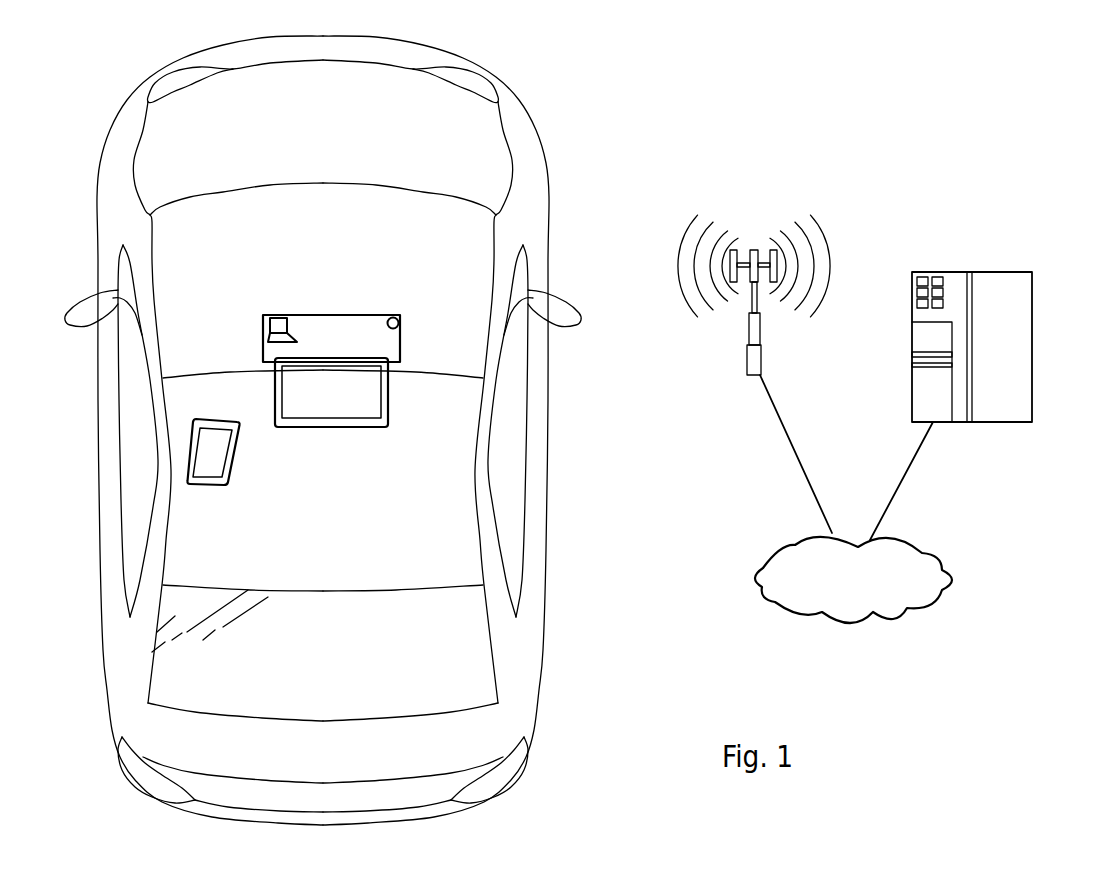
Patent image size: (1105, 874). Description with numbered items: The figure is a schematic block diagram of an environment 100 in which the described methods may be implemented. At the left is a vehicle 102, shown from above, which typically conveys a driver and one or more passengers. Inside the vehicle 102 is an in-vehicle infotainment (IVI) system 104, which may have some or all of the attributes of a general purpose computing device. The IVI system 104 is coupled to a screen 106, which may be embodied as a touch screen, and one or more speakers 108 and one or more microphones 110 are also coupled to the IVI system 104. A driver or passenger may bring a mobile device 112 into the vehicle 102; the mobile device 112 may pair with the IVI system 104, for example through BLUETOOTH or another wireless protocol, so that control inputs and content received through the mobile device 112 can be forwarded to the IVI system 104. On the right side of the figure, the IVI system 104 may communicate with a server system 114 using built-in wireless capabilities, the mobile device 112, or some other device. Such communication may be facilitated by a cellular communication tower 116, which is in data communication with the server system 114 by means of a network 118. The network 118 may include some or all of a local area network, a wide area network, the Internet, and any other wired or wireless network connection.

The environment 100 is at (1008, 668).
The vehicle 102 is at (338, 501).
The in-vehicle infotainment (IVI) system 104 is at (363, 352).
The screen 106 is at (347, 404).
The speaker 108 is at (268, 321).
The microphone 110 is at (395, 318).
The mobile device 112 is at (203, 484).
The server system 114 is at (1032, 332).
The cellular communication tower 116 is at (747, 347).
The network 118 is at (907, 591).